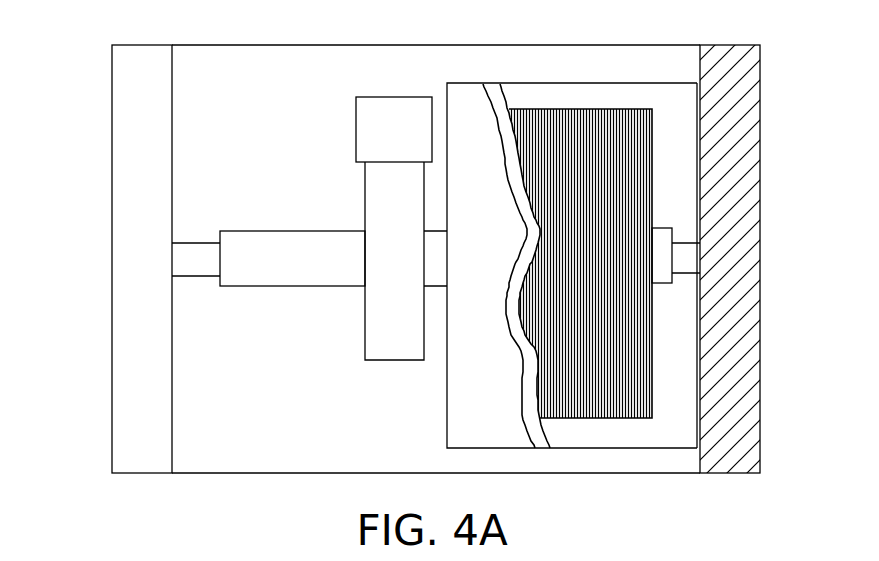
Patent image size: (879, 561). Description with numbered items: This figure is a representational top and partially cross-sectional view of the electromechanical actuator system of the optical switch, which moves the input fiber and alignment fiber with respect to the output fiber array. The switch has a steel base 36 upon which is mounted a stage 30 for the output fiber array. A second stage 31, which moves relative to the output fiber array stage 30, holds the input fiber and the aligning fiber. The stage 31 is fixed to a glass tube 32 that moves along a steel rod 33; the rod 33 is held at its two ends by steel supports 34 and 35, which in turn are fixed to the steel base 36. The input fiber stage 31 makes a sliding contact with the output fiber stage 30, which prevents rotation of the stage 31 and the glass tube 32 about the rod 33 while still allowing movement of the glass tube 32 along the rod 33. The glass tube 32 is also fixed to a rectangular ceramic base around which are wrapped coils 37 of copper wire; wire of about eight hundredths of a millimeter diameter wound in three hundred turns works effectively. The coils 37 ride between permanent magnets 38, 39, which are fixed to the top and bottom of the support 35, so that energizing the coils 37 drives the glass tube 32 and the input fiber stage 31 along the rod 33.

The stage 30 is at (395, 113).
The second stage 31 is at (373, 343).
The glass tube 32 is at (267, 270).
The steel rod 33 is at (193, 252).
The steel support 34 is at (128, 334).
The steel support 35 is at (728, 330).
The base 36 is at (267, 457).
The coils 37 is at (615, 127).
The permanent magnet 38 is at (468, 97).
The permanent magnet 39 is at (680, 173).